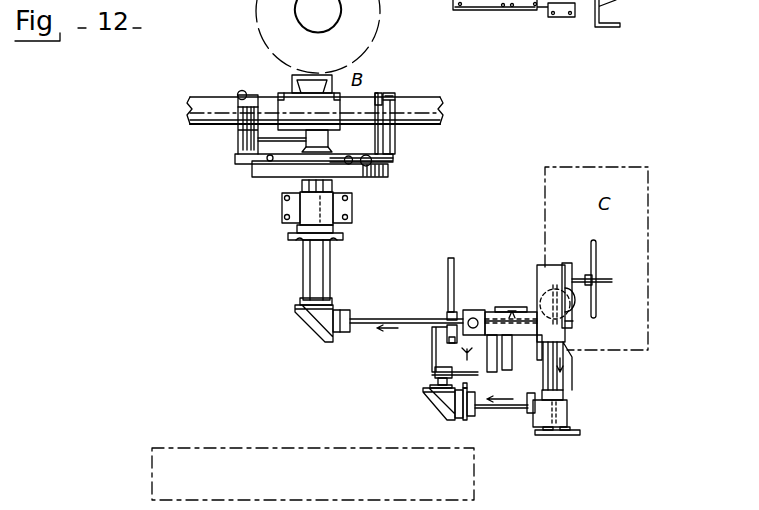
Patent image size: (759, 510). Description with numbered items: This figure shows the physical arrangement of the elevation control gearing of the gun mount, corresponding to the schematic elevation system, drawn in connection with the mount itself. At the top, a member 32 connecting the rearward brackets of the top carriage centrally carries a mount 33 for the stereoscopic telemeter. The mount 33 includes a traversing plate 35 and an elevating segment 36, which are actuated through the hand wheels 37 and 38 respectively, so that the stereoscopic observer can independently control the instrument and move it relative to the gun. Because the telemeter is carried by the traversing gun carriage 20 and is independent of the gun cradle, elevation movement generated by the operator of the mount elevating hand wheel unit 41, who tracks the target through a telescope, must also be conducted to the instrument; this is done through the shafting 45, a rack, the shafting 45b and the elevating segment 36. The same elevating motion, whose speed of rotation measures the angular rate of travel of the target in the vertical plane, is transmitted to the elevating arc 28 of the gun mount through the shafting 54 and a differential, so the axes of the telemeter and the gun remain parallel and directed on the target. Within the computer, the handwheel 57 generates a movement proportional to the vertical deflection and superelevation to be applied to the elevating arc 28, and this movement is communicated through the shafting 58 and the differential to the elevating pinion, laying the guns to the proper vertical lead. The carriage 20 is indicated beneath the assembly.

The carriage 20 is at (313, 474).
The elevating arc 28 is at (448, 270).
The member 32 is at (352, 204).
The mount 33 is at (393, 161).
The traversing plate 35 is at (258, 1).
The elevating segment 36 is at (240, 139).
The hand wheel 37 is at (388, 173).
The hand wheel 38 is at (238, 91).
The mount elevating hand wheel unit 41 is at (596, 312).
The shafting 45 is at (361, 323).
The shafting 45b is at (297, 141).
The shafting 54 is at (474, 312).
The handwheel 57 is at (570, 305).
The shafting 58 is at (513, 408).